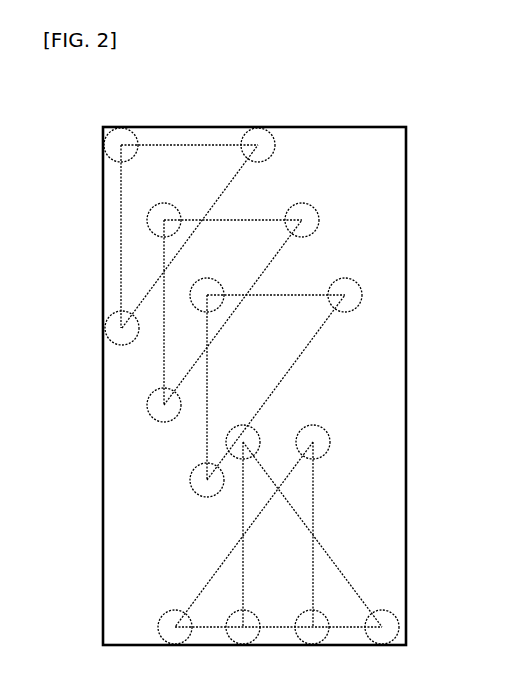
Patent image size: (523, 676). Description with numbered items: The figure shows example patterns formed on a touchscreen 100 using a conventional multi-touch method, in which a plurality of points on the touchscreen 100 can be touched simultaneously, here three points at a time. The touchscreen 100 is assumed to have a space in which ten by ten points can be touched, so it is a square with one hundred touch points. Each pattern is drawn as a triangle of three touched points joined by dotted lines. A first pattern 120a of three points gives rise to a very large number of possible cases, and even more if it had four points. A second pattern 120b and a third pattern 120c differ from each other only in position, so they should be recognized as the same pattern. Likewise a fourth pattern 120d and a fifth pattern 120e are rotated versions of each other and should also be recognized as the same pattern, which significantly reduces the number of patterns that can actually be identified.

The touchscreen 100 is at (406, 383).
The first pattern 120a is at (192, 145).
The second pattern 120b is at (263, 220).
The third pattern 120c is at (302, 295).
The fourth pattern 120d is at (207, 583).
The fifth pattern 120e is at (352, 580).